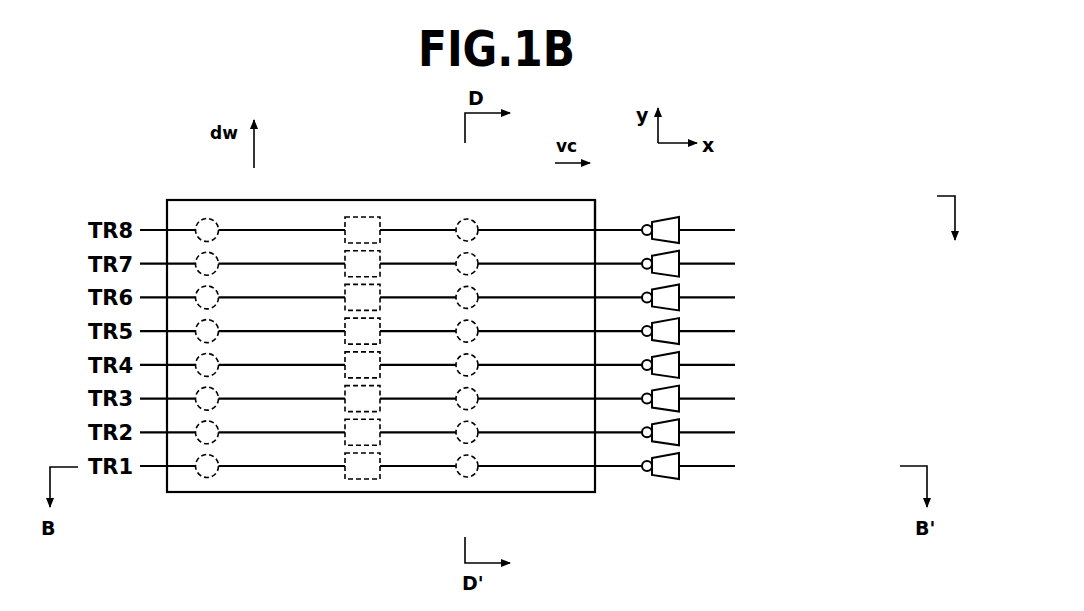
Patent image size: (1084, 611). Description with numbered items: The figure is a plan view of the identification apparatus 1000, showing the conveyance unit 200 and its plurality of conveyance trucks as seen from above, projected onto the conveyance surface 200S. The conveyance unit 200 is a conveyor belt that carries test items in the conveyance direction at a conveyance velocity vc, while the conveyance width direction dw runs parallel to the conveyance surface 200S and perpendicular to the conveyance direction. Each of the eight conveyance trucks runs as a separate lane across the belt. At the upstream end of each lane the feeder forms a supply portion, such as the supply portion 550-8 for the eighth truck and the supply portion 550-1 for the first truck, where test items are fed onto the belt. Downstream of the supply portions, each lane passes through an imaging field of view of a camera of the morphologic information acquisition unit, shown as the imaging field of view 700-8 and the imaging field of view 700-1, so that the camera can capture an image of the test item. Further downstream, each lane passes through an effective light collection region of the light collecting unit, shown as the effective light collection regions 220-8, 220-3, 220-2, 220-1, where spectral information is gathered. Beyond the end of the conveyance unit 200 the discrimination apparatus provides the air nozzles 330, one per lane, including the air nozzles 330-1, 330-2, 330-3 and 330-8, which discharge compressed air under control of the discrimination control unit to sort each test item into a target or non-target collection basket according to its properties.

The identification apparatus 1000 is at (136, 122).
The conveyance unit 200 is at (597, 208).
The conveyance surface 200S is at (559, 220).
The supply portion 550-8 is at (206, 218).
The supply portion 550-1 is at (209, 478).
The imaging field of view 700-8 is at (360, 217).
The imaging field of view 700-1 is at (362, 481).
The effective light collection region 220-8 is at (467, 218).
The effective light collection region 220-3 is at (478, 405).
The effective light collection region 220-2 is at (478, 437).
The effective light collection region 220-1 is at (468, 478).
The air nozzles 330 is at (741, 407).
The air nozzle 330-1 is at (627, 504).
The air nozzle 330-2 is at (683, 438).
The air nozzle 330-3 is at (682, 405).
The air nozzle 330-8 is at (735, 232).